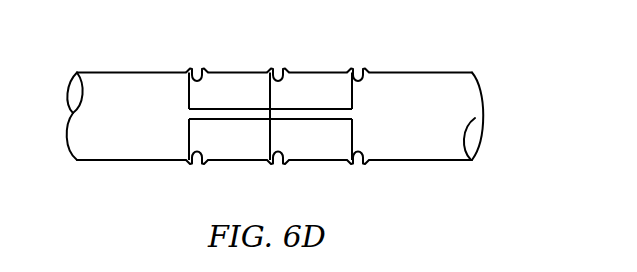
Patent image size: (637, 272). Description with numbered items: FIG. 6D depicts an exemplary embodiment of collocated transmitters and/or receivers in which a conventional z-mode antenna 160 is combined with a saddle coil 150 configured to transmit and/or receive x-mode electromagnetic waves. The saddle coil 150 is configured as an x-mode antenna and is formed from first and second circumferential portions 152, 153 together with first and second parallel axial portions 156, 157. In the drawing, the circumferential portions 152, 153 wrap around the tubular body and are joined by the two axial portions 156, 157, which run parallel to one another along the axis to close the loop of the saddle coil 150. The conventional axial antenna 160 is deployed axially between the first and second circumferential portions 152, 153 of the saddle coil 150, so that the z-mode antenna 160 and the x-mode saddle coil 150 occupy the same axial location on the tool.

The saddle coil 150 is at (197, 73).
The first circumferential portion 152 is at (353, 126).
The second circumferential portion 153 is at (188, 97).
The first parallel axial portion 156 is at (243, 122).
The second parallel axial portion 157 is at (302, 108).
The z-mode antenna 160 is at (270, 90).